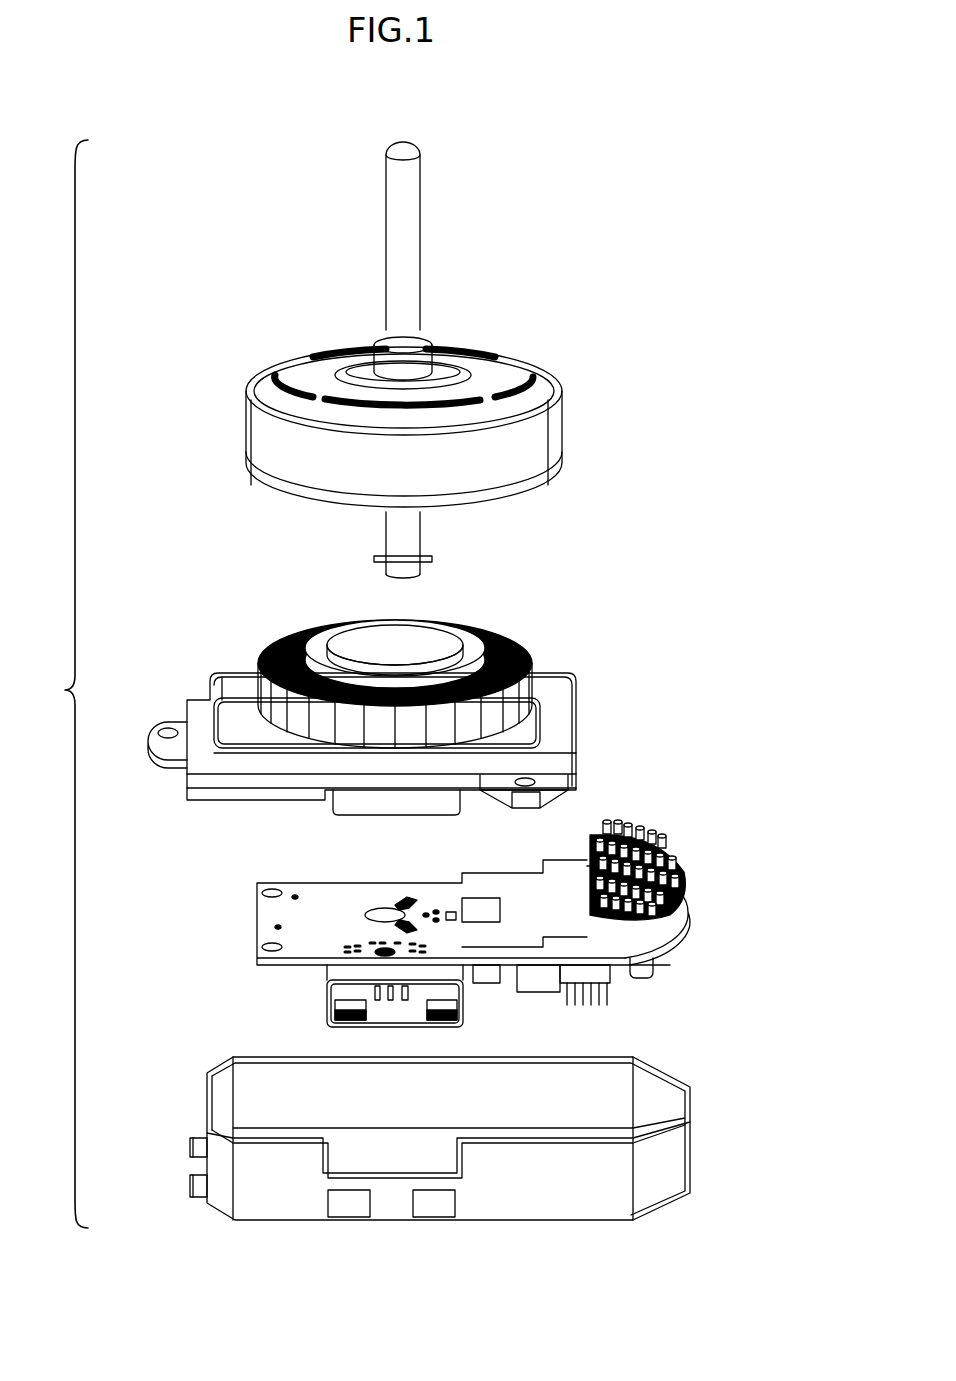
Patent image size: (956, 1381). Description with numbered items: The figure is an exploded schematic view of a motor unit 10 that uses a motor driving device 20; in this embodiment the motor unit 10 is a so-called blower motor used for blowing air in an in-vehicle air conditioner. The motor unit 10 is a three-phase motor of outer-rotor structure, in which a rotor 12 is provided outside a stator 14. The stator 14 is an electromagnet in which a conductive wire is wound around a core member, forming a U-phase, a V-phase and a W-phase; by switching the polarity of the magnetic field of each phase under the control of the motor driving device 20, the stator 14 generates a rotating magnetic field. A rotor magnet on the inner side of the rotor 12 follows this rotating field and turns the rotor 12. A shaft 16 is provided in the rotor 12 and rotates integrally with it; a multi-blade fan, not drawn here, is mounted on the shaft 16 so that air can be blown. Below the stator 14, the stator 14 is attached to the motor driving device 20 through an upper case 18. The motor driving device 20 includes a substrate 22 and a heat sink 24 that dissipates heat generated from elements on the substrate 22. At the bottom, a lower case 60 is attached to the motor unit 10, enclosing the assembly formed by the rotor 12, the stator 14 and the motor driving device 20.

The motor unit 10 is at (725, 212).
The rotor 12 is at (562, 424).
The stator 14 is at (507, 637).
The shaft 16 is at (421, 220).
The upper case 18 is at (577, 715).
The motor driving device 20 is at (747, 782).
The substrate 22 is at (257, 918).
The heat sink 24 is at (688, 875).
The lower case 60 is at (692, 1143).